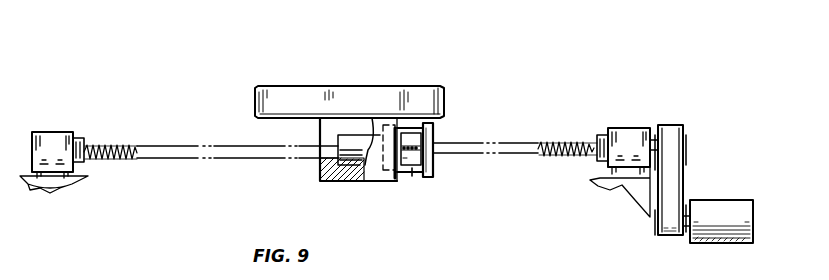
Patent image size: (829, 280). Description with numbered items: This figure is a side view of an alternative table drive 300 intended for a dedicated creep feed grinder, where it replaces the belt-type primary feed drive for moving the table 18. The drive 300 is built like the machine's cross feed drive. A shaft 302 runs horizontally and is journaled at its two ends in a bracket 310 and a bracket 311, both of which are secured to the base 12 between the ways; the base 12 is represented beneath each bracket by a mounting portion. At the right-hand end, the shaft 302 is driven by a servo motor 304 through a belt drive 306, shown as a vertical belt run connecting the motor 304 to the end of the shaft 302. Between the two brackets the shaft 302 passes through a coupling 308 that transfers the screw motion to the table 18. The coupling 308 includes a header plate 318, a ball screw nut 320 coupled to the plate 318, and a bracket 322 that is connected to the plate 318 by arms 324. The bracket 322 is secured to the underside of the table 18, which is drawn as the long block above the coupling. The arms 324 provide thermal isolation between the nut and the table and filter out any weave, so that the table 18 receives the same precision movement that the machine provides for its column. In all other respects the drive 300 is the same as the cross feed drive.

The drive 300 is at (198, 91).
The bracket 310 is at (60, 132).
The base 12 is at (72, 186).
The table 18 is at (379, 83).
The bracket 322 is at (322, 182).
The ball screw nut 320 is at (406, 178).
The arms 324 is at (417, 178).
The header plate 318 is at (433, 168).
The coupling 308 is at (463, 125).
The shaft 302 is at (582, 157).
The bracket 311 is at (625, 176).
The belt drive 306 is at (683, 160).
The servo motor 304 is at (707, 200).